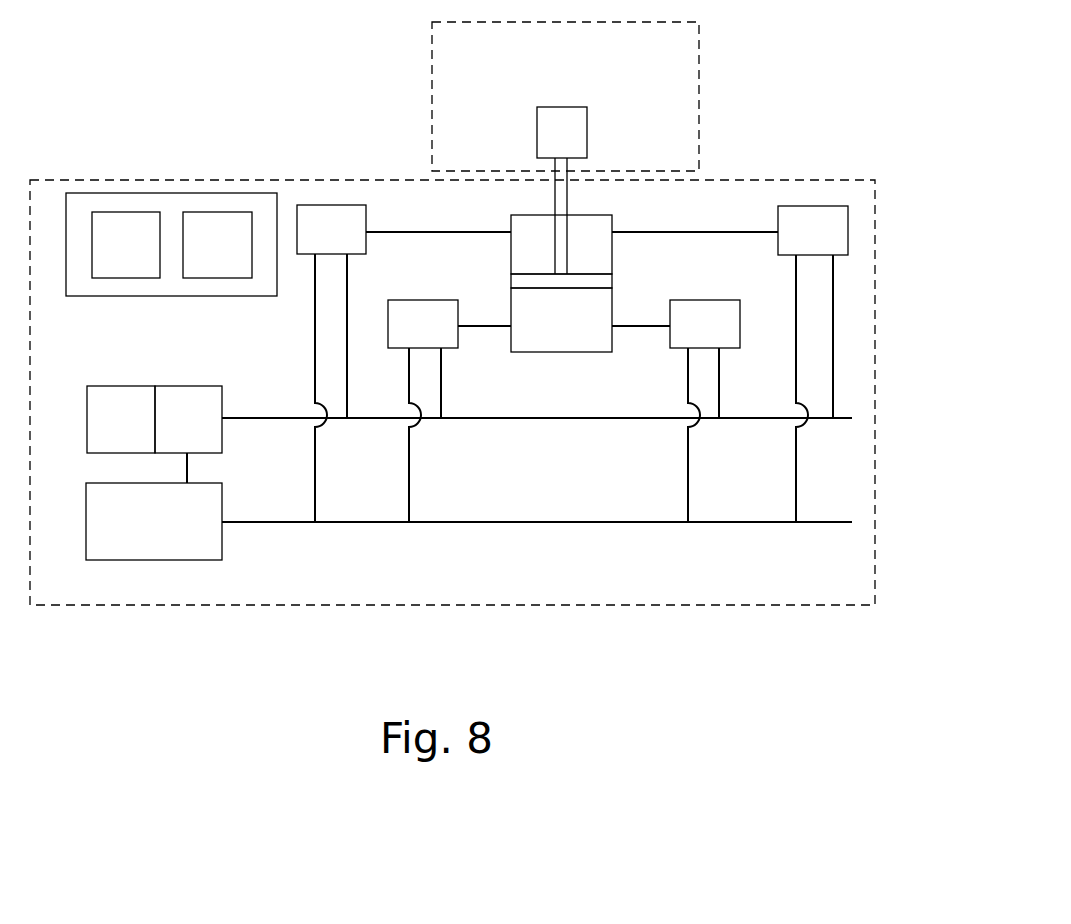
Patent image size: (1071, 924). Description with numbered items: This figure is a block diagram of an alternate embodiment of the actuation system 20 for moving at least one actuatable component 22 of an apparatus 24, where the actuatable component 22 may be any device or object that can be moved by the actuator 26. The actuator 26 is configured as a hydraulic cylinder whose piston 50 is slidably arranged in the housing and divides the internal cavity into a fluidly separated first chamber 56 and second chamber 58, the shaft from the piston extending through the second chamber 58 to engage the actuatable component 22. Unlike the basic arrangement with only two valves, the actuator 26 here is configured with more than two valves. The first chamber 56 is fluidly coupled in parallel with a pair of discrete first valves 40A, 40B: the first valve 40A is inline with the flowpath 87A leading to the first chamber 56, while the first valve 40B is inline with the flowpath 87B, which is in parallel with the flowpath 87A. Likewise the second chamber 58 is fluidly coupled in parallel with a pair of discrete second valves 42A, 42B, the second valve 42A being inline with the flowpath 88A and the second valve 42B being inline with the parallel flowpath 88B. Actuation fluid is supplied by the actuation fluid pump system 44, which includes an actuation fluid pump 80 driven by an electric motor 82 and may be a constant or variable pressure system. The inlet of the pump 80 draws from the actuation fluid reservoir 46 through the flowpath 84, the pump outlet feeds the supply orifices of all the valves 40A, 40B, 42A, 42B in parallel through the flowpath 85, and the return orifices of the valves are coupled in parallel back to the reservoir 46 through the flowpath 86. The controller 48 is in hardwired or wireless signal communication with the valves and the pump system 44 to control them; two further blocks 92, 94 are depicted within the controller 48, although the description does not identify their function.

The actuation system 20 is at (845, 175).
The actuatable component 22 is at (562, 132).
The apparatus 24 is at (706, 45).
The actuator 26 is at (549, 255).
The first valve 40A is at (423, 324).
The first valve 40B is at (705, 324).
The second valve 42A is at (331, 229).
The second valve 42B is at (813, 230).
The actuation fluid pump system 44 is at (131, 405).
The actuation fluid reservoir 46 is at (154, 521).
The controller 48 is at (171, 275).
The piston 50 is at (607, 281).
The first chamber 56 is at (561, 320).
The second chamber 58 is at (561, 216).
The actuation fluid pump 80 is at (188, 419).
The electric motor 82 is at (121, 419).
The flowpath 84 is at (195, 465).
The flowpath 85 is at (527, 420).
The flowpath 86 is at (543, 523).
The flowpath 87A is at (477, 330).
The flowpath 87B is at (633, 330).
The flowpath 88A is at (417, 230).
The flowpath 88B is at (688, 233).
The display 92 is at (126, 245).
The input device 94 is at (217, 245).